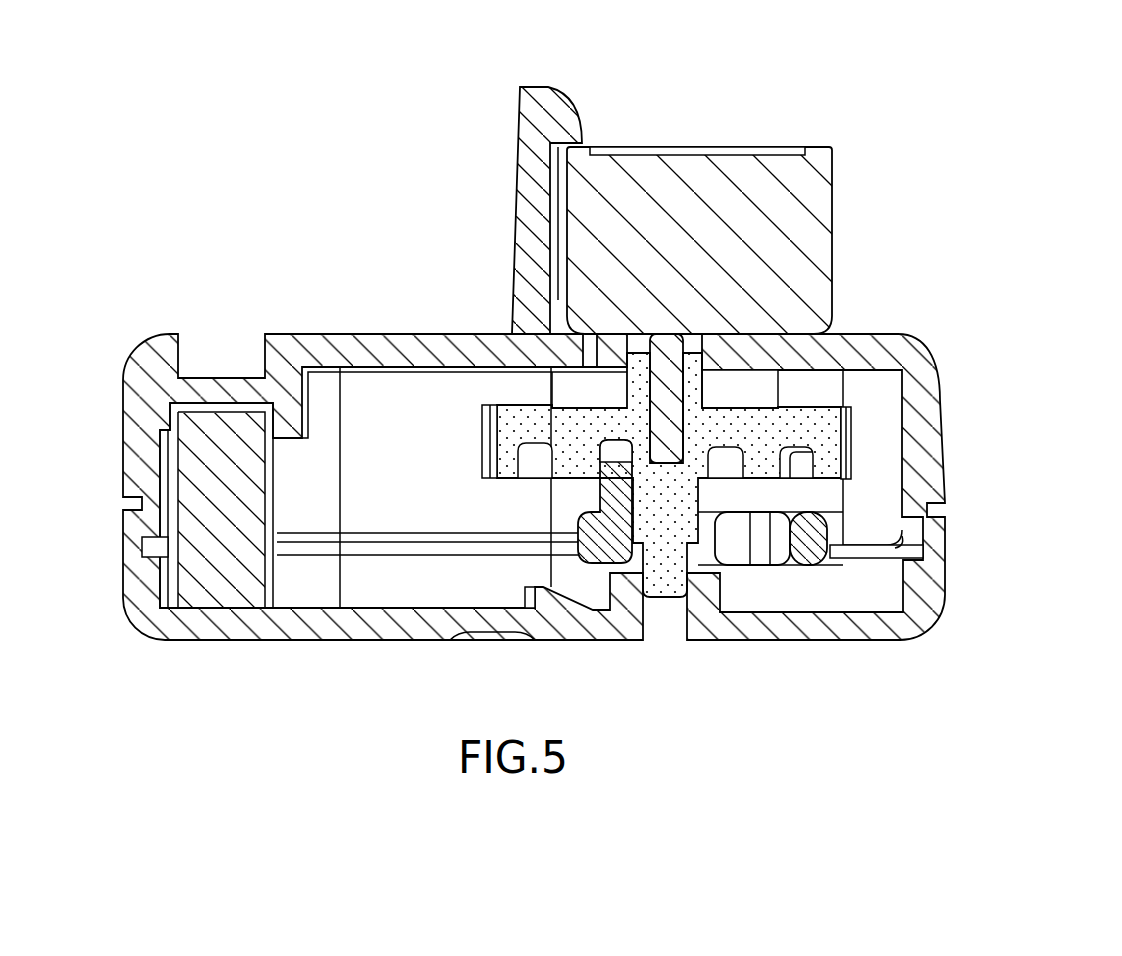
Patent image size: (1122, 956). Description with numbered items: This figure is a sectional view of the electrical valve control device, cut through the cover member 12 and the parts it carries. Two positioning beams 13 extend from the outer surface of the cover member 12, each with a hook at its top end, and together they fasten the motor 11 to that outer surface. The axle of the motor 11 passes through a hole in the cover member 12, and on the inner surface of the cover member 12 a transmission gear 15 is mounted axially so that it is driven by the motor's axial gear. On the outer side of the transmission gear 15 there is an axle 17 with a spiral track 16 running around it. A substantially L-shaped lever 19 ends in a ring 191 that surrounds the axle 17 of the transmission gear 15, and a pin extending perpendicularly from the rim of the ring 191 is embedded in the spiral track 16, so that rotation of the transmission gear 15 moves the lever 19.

The motor 11 is at (683, 182).
The cover member 12 is at (918, 410).
The positioning beam 13 is at (532, 225).
The transmission gear 15 is at (812, 420).
The spiral track 16 is at (795, 470).
The axle 17 is at (678, 510).
The lever 19 is at (760, 542).
The ring 191 is at (612, 490).